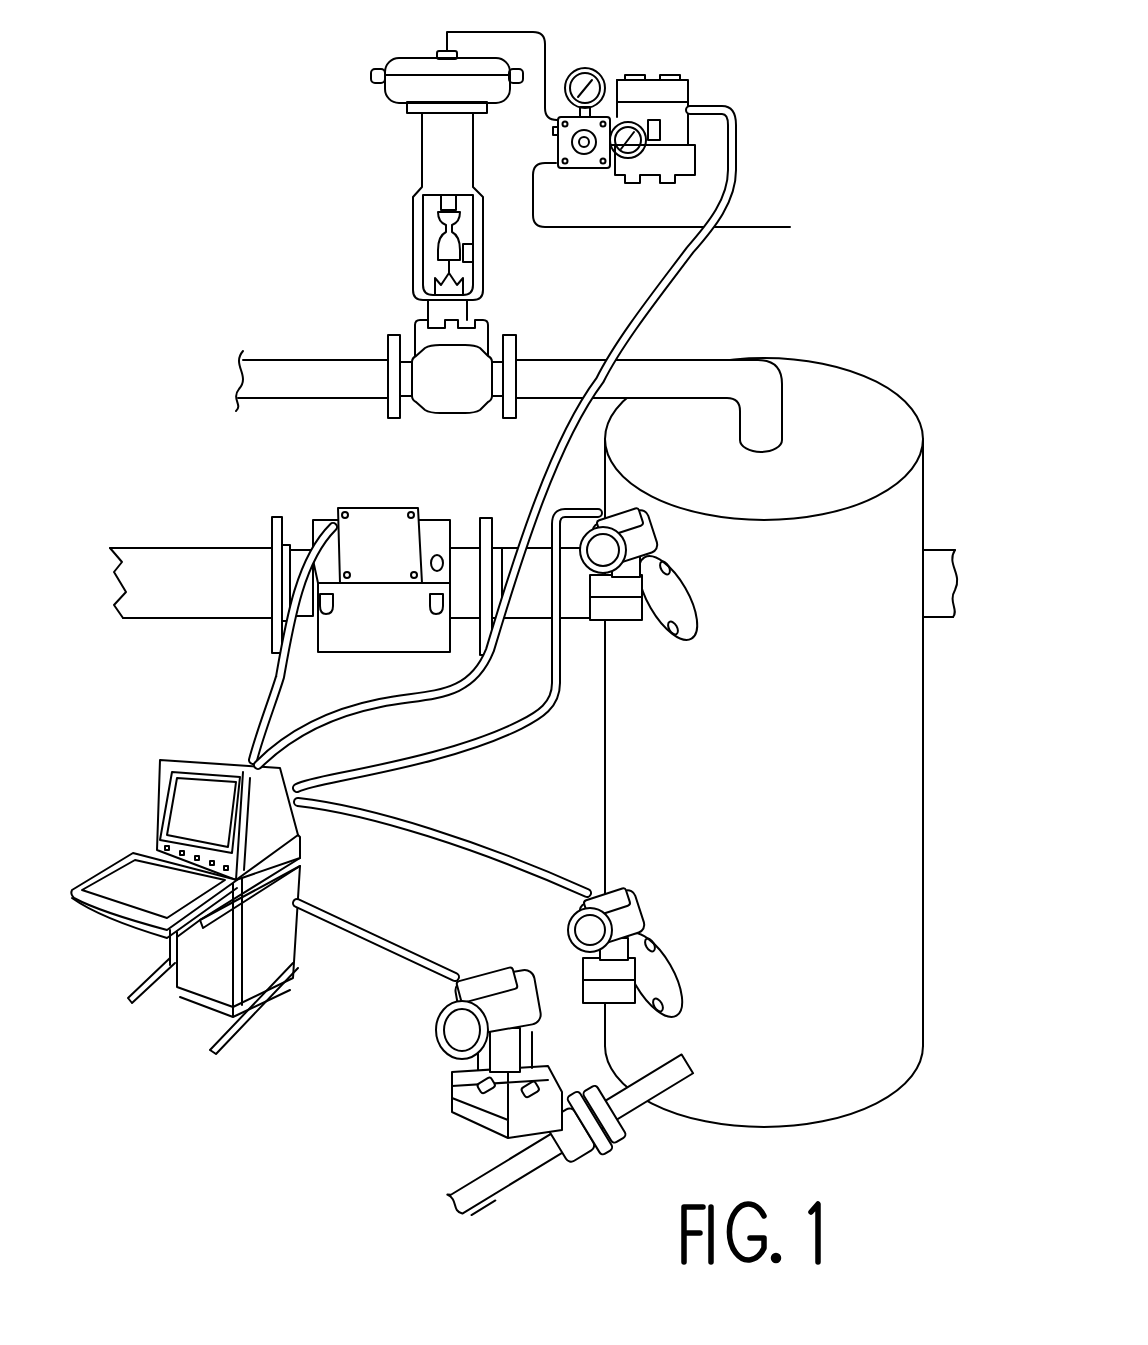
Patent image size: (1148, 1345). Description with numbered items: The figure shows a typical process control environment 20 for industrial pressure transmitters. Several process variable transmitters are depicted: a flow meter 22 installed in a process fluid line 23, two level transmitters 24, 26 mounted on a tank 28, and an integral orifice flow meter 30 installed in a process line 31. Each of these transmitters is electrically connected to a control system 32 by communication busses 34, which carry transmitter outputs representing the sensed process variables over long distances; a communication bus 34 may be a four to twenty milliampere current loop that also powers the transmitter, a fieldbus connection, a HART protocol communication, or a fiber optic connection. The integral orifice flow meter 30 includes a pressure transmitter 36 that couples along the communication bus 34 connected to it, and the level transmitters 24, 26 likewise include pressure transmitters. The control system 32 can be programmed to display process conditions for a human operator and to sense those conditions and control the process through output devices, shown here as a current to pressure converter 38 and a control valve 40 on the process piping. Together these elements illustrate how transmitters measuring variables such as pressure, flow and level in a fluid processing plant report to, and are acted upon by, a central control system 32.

The process control environment 20 is at (213, 300).
The flow meter 22 is at (392, 554).
The process fluid line 23 is at (208, 593).
The level transmitter 24 is at (664, 608).
The level transmitter 26 is at (652, 992).
The tank 28 is at (829, 753).
The integral orifice flow meter 30 is at (446, 1100).
The process line 31 is at (509, 1173).
The control system 32 is at (186, 758).
The communication bus 34 is at (270, 686).
The pressure transmitter 36 is at (440, 1011).
The current to pressure converter 38 is at (690, 98).
The control valve 40 is at (407, 240).